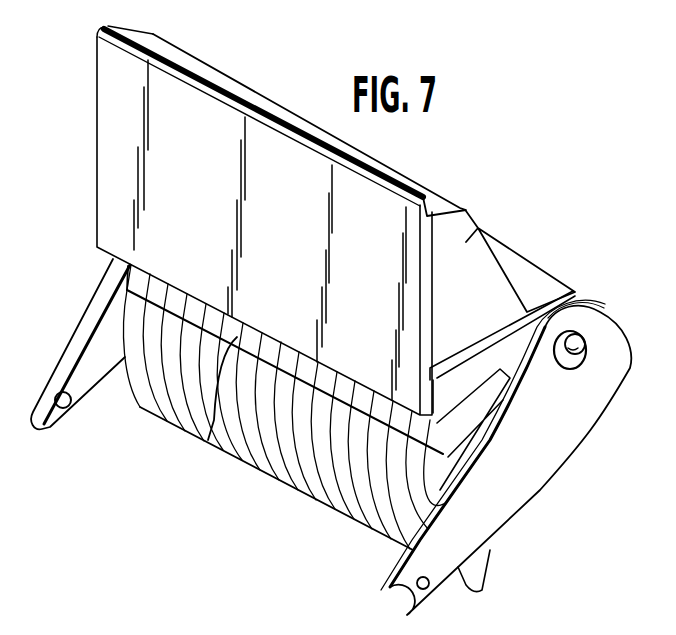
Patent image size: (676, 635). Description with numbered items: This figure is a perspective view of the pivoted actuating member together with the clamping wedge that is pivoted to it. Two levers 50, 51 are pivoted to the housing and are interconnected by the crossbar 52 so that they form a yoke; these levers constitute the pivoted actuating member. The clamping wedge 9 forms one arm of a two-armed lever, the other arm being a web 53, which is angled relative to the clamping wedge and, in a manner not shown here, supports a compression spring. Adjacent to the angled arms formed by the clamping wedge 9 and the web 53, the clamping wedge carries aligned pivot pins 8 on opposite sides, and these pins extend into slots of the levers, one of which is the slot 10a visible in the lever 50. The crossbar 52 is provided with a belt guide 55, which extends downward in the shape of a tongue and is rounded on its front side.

The clamping wedge 9 is at (478, 228).
The web 53 is at (522, 268).
The slot 10a is at (598, 312).
The pivot pin 8 is at (628, 371).
The lever 50 is at (552, 457).
The lever 51 is at (103, 328).
The crossbar 52 is at (207, 442).
The belt guide 55 is at (267, 463).